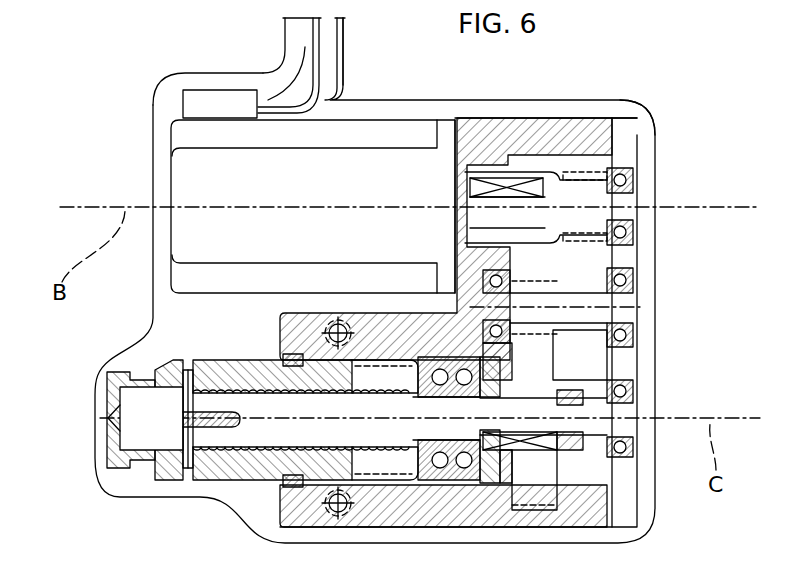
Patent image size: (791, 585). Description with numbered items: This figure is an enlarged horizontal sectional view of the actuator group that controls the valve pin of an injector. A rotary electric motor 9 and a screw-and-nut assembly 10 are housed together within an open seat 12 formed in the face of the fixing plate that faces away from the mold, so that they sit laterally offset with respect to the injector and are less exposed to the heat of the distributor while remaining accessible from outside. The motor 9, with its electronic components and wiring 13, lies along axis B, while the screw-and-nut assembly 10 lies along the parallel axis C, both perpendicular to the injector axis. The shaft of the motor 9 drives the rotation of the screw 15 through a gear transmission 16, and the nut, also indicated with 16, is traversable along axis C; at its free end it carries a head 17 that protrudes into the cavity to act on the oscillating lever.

The rotary electric motor 9 is at (192, 184).
The screw-and-nut assembly 10 is at (240, 488).
The open seat 12 is at (634, 130).
The electronic components and wiring 13 is at (299, 55).
The screw 15 is at (373, 430).
The gear transmission 16 is at (220, 371).
The head 17 is at (100, 372).